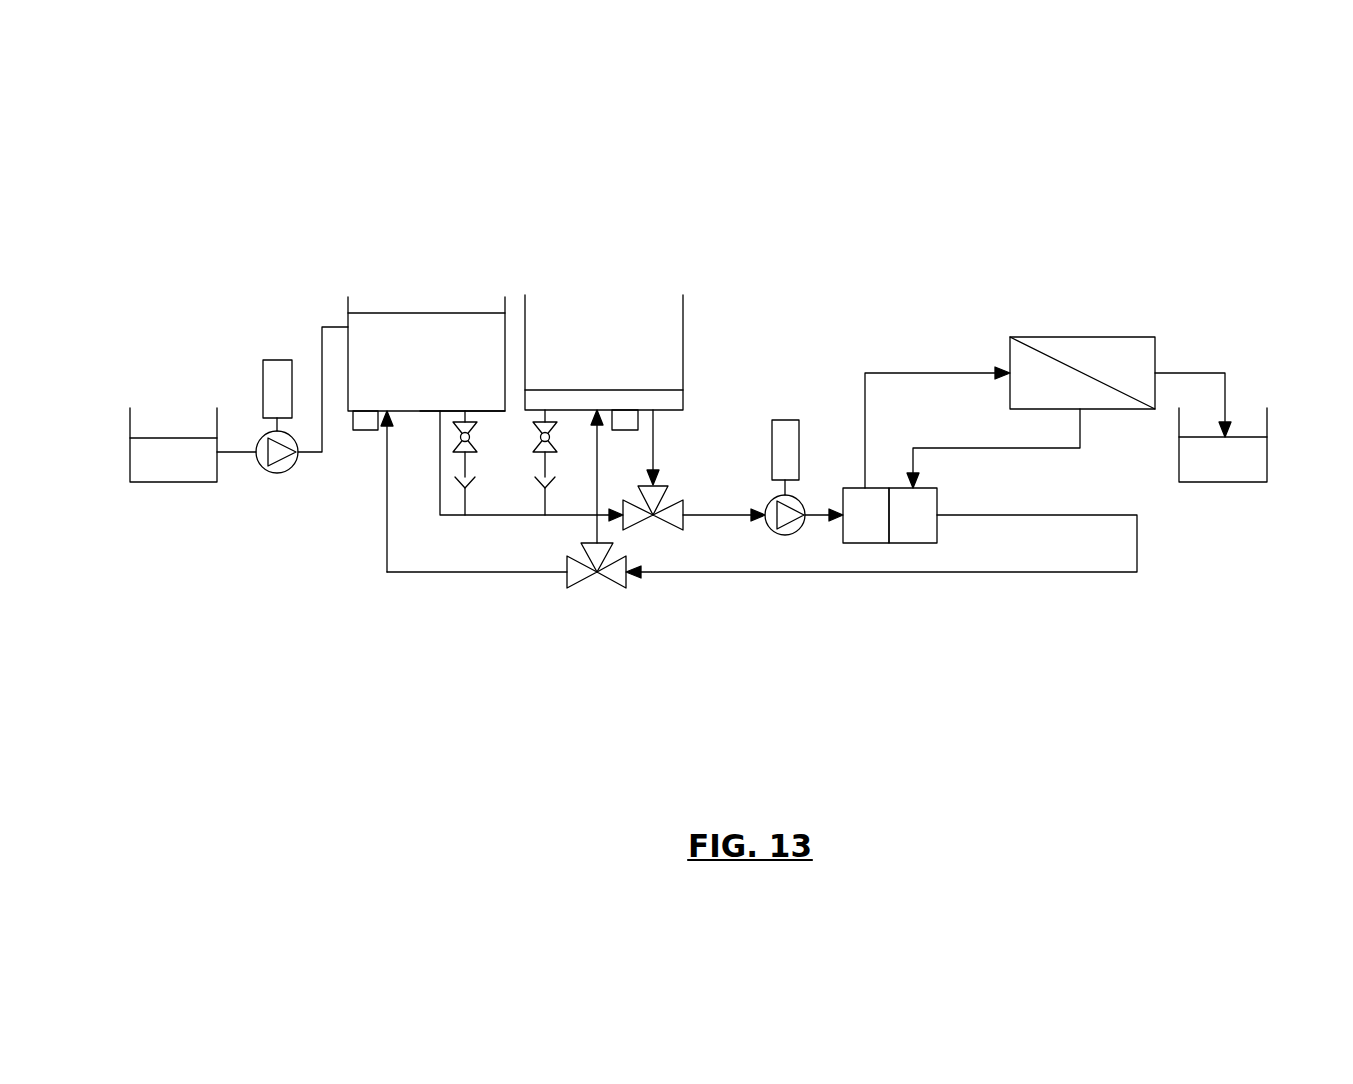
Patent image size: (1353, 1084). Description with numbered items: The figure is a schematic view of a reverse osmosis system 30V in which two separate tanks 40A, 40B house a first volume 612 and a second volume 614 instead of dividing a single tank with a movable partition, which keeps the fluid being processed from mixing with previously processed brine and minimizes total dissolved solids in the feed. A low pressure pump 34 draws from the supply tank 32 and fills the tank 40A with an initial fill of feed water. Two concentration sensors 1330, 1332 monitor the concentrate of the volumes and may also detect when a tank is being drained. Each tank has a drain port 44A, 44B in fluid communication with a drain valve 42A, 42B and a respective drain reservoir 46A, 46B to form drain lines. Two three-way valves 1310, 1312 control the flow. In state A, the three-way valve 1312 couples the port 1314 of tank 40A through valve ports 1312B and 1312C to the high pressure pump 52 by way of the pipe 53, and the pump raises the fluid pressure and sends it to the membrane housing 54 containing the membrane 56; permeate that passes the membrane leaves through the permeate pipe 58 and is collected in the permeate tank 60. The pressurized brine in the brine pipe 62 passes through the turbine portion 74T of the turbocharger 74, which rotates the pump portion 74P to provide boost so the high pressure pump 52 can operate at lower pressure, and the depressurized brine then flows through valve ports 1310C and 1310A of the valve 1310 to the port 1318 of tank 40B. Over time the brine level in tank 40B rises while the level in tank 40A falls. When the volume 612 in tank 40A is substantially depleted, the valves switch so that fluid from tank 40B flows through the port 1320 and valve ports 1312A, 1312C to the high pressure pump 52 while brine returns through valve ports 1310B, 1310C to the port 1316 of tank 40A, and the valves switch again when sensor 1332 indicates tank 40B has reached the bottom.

The reverse osmosis system 30V is at (306, 199).
The supply tank 32 is at (172, 484).
The low pressure pump 34 is at (272, 474).
The tank 40A is at (382, 329).
The tank 40B is at (630, 345).
The first volume 612 is at (363, 330).
The second volume 614 is at (620, 398).
The concentration sensor 1330 is at (365, 432).
The concentration sensor 1332 is at (684, 413).
The port 1314 is at (422, 418).
The port 1316 is at (397, 427).
The port 1318 is at (595, 447).
The port 1320 is at (653, 428).
The drain valve 42A is at (463, 424).
The drain valve 42B is at (541, 427).
The drain port 44A is at (453, 413).
The drain port 44B is at (537, 413).
The drain reservoir 46A is at (463, 486).
The drain reservoir 46B is at (547, 488).
The three-way valve 1310 is at (620, 624).
The valve port 1310A is at (590, 538).
The valve port 1310B is at (587, 586).
The valve port 1310C is at (627, 578).
The three-way valve 1312 is at (712, 532).
The valve port 1312A is at (660, 481).
The valve port 1312B is at (612, 530).
The valve port 1312C is at (718, 500).
The high pressure pump 52 is at (785, 420).
The pipe 53 is at (914, 373).
The membrane housing 54 is at (1078, 368).
The membrane 56 is at (1093, 347).
The permeate pipe 58 is at (1181, 373).
The permeate tank 60 is at (1220, 482).
The brine pipe 62 is at (1003, 448).
The turbocharger 74 is at (915, 521).
The pump portion 74P is at (853, 488).
The turbine portion 74T is at (937, 533).